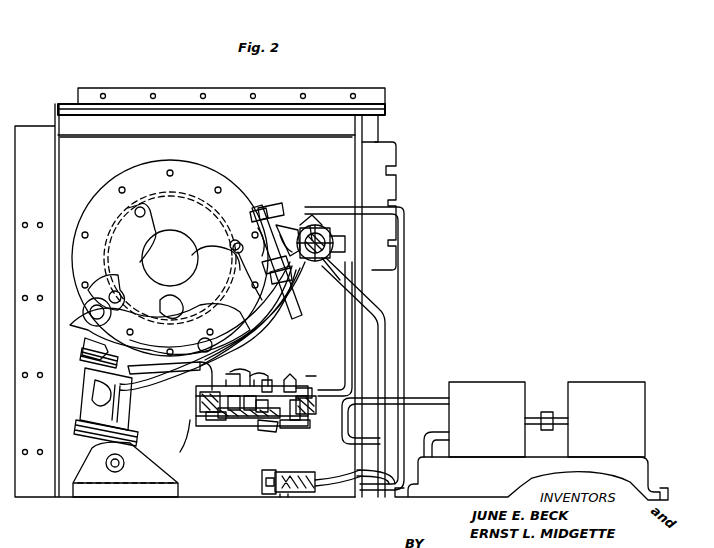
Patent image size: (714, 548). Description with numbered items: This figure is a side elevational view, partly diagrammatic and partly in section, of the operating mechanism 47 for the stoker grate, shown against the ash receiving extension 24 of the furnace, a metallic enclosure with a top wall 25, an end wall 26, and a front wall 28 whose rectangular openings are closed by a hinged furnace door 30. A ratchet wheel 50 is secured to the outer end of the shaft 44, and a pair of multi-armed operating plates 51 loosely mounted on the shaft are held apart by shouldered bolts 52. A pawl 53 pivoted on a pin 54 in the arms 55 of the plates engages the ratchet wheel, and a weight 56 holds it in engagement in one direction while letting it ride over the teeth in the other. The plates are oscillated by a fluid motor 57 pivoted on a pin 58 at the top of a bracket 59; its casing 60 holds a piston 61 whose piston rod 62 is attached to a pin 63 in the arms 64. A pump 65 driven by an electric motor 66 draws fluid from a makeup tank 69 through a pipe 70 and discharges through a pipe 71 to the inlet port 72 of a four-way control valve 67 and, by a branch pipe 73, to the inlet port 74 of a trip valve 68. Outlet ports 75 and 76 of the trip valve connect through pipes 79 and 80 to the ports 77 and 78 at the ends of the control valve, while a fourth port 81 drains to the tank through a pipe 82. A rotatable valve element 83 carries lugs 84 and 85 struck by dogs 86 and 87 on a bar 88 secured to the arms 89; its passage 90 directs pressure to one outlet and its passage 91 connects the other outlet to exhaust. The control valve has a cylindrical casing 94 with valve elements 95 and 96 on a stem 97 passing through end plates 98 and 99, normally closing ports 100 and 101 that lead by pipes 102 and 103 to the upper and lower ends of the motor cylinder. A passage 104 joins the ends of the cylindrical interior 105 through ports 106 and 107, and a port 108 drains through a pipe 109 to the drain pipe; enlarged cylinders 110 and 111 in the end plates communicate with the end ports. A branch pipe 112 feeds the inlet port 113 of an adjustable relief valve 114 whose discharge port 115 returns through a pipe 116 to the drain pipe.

The ash receiving extension 24 is at (386, 104).
The top wall 25 is at (192, 96).
The end wall 26 is at (170, 251).
The front wall 28 is at (380, 126).
The hinged furnace door 30 is at (392, 156).
The shaft 44 is at (170, 258).
The operating mechanism 47 is at (242, 163).
The ratchet wheel 50 is at (130, 230).
The multi-armed operating plate 51 is at (196, 212).
The shouldered bolt 52 is at (150, 205).
The pawl 53 is at (250, 340).
The pin 54 is at (195, 345).
The arm 55 is at (181, 351).
The weight 56 is at (276, 326).
The fluid motor 57 is at (78, 430).
The pin 58 is at (112, 463).
The bracket 59 is at (90, 486).
The casing 60 is at (85, 363).
The piston 61 is at (85, 404).
The piston rod 62 is at (85, 342).
The pin 63 is at (90, 308).
The arm 64 is at (118, 340).
The pump 65 is at (484, 386).
The electric motor 66 is at (597, 386).
The four-way control valve 67 is at (300, 359).
The trip valve 68 is at (306, 212).
The makeup tank 69 is at (440, 490).
The pipe 70 is at (445, 436).
The pipe 71 is at (410, 398).
The inlet port 72 is at (268, 382).
The branch pipe 73 is at (398, 330).
The inlet port 74 is at (322, 258).
The outlet port 75 is at (310, 262).
The outlet port 76 is at (322, 228).
The port 77 is at (196, 398).
The port 78 is at (308, 392).
The pipe 79 is at (288, 310).
The pipe 80 is at (346, 337).
The fourth port 81 is at (298, 228).
The pipe 82 is at (408, 264).
The rotatable valve element 83 is at (330, 245).
The lug 84 is at (256, 210).
The lug 85 is at (270, 268).
The dog 86 is at (266, 210).
The dog 87 is at (276, 283).
The bar 88 is at (236, 252).
The arm 89 is at (258, 230).
The slot or passage 90 is at (316, 290).
The port or passage 91 is at (312, 226).
The cylindrical casing 94 is at (242, 424).
The valve element 95 is at (234, 420).
The valve element 96 is at (304, 408).
The stem 97 is at (292, 382).
The end plate 98 is at (186, 438).
The end plate 99 is at (305, 386).
The port 100 is at (245, 374).
The port 101 is at (262, 380).
The pipe 102 is at (160, 374).
The pipe 103 is at (176, 398).
The passage 104 is at (256, 430).
The cylindrical interior 105 is at (240, 374).
The port 106 is at (218, 424).
The port 107 is at (296, 424).
The port 108 is at (270, 428).
The pipe 109 is at (314, 478).
The enlarged cylinder 110 is at (204, 415).
The enlarged cylinder 111 is at (312, 374).
The branch pipe 112 is at (260, 474).
The inlet port 113 is at (266, 488).
The adjustable relief valve 114 is at (278, 496).
The discharge port 115 is at (290, 500).
The pipe 116 is at (342, 496).